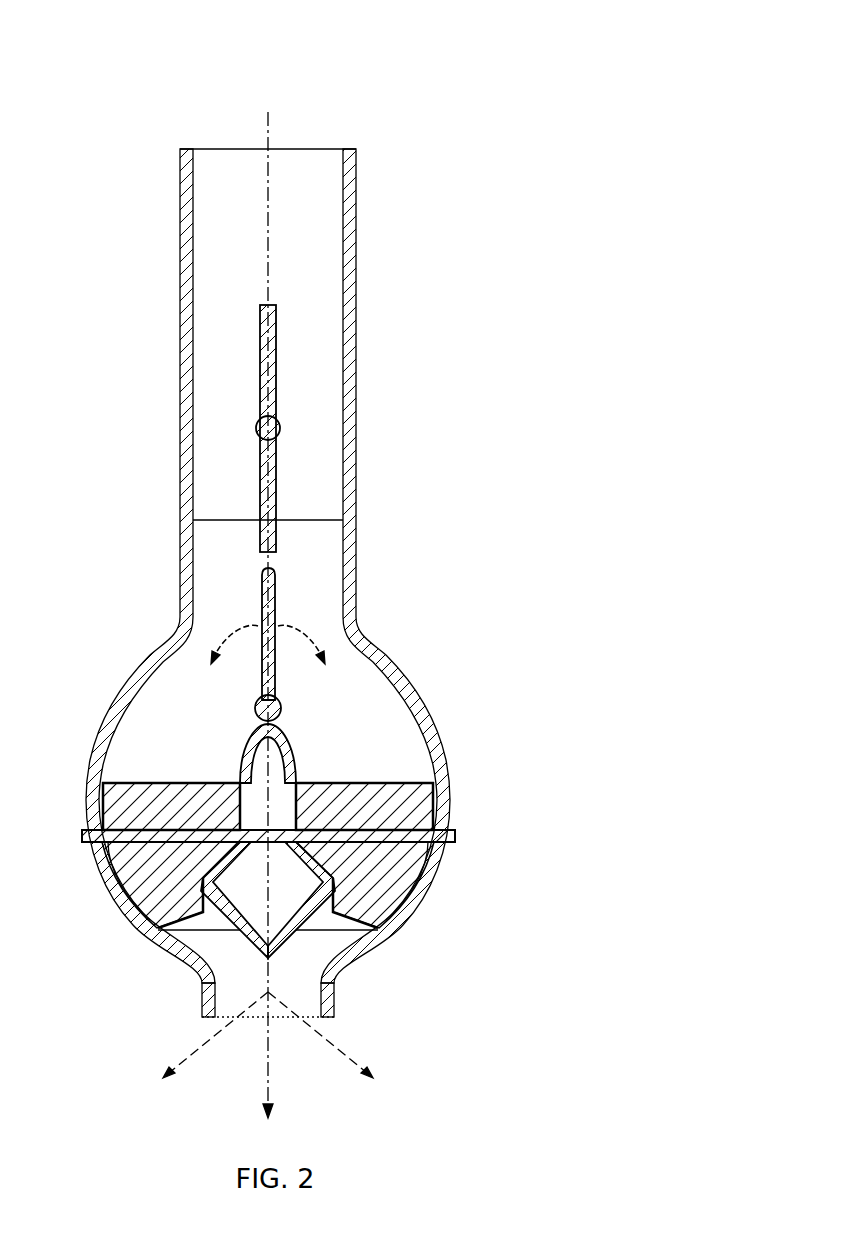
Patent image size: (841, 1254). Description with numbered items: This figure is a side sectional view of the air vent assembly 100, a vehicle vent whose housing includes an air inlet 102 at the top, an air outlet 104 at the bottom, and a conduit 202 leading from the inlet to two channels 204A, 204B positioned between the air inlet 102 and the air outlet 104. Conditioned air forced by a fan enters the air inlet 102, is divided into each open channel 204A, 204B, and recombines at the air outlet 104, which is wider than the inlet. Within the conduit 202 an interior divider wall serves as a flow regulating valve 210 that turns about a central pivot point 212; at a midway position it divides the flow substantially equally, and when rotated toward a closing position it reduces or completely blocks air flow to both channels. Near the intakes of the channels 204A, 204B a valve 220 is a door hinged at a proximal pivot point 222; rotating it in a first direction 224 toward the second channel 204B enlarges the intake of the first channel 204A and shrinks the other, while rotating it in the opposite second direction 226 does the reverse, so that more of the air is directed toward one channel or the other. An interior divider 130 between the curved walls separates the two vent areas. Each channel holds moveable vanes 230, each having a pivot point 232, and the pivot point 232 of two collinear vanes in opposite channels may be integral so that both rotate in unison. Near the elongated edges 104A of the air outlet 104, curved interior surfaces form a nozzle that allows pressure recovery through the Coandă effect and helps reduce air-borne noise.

The air vent assembly 100 is at (536, 156).
The air inlet 102 is at (208, 151).
The air outlet 104 is at (250, 1018).
The elongated edges of the air outlet 104A is at (190, 975).
The interior divider 130 is at (277, 900).
The conduit 202 is at (254, 273).
The first channel 204A is at (159, 750).
The second channel 204B is at (321, 765).
The flow regulating valve 210 is at (272, 484).
The pivot point 212 is at (280, 427).
The valve 220 is at (271, 580).
The pivot point 222 is at (282, 708).
The first direction 224 is at (312, 703).
The second direction 226 is at (197, 703).
The moveable vanes 230 is at (167, 873).
The pivot point 232 is at (456, 838).